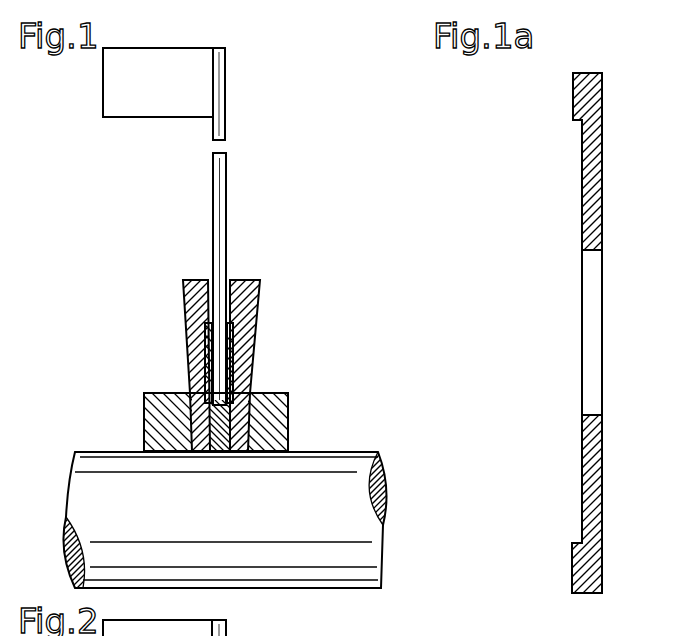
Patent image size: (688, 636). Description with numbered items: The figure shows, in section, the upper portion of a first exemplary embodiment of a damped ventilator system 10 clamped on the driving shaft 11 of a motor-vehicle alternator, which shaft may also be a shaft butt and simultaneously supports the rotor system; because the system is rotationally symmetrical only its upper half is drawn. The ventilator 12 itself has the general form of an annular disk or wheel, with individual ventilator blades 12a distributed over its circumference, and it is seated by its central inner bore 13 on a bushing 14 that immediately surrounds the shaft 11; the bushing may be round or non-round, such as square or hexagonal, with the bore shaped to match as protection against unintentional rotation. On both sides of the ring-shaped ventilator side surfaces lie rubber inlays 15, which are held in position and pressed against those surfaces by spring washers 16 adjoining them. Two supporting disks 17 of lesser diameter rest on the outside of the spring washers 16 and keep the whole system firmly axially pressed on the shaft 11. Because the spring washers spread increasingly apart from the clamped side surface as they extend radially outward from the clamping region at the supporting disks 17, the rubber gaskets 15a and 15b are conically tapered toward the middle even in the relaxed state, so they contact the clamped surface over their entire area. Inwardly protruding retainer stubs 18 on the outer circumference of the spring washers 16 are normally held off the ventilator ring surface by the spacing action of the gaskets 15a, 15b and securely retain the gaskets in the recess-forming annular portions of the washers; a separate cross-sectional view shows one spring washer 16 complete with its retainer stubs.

In FIG. 1, the ventilator system 10 is at (237, 234).
In FIG. 1, the driving shaft 11 is at (342, 483).
In FIG. 1, the ventilator 12 is at (212, 187).
In FIG. 1, the ventilator blades 12a is at (117, 100).
In FIG. 1, the central inner bore 13 is at (165, 404).
In FIG. 1, the bushing 14 is at (240, 426).
In FIG. 1, the rubber inlays 15 is at (233, 332).
In FIG. 1, the rubber gasket 15a is at (205, 335).
In FIG. 1, the rubber gasket 15b is at (252, 350).
In FIG. 1, the spring washers 16 is at (250, 278).
In FIG. 1A, the spring washers 16 is at (586, 470).
In FIG. 1, the supporting disks 17 is at (147, 393).
In FIG. 1, the retainer stubs 18 is at (183, 283).